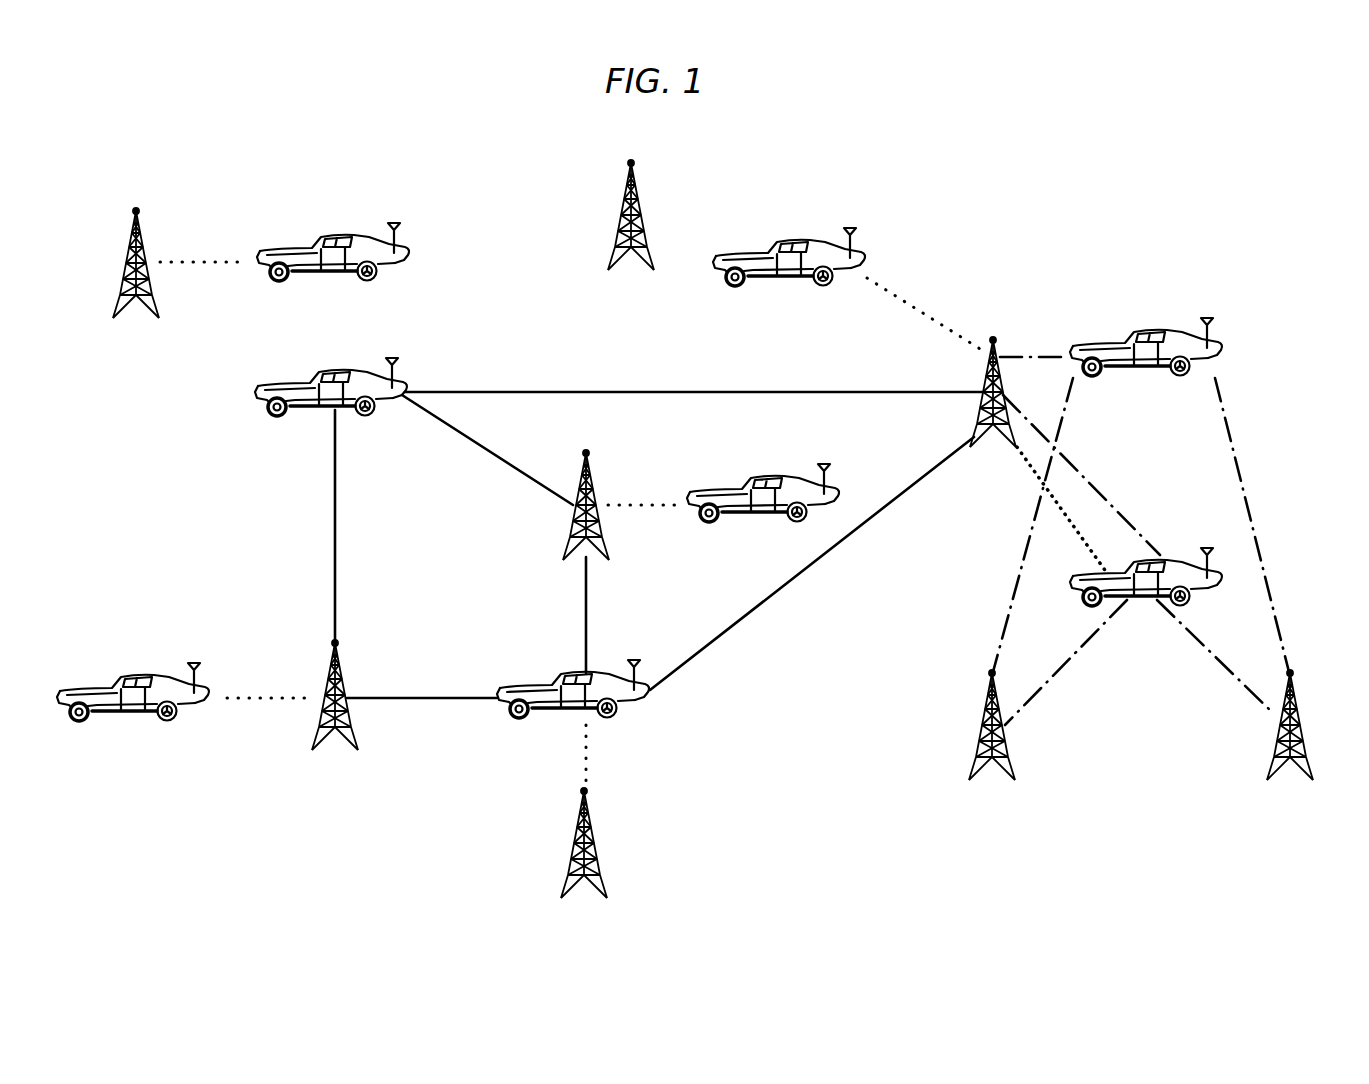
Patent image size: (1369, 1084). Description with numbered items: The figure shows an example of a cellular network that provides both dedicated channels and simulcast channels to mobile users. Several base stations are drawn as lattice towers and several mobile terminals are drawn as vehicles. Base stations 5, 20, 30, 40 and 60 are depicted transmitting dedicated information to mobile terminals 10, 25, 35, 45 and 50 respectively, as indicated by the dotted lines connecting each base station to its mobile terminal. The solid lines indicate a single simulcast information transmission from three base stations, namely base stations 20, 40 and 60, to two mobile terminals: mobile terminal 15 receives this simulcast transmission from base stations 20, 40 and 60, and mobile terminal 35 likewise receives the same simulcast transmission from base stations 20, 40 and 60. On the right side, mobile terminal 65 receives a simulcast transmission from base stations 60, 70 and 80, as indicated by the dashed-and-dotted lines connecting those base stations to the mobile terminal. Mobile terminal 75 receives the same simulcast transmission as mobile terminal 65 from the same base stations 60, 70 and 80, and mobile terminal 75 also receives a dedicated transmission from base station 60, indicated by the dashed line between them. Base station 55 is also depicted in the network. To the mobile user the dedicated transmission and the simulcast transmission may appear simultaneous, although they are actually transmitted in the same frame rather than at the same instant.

The base station 5 is at (124, 261).
The mobile terminal 10 is at (348, 235).
The mobile terminal 15 is at (347, 370).
The base station 20 is at (329, 668).
The mobile terminal 25 is at (153, 675).
The base station 30 is at (574, 842).
The mobile terminal 35 is at (540, 672).
The base station 40 is at (569, 533).
The mobile terminal 45 is at (790, 476).
The mobile terminal 50 is at (810, 240).
The base station 55 is at (620, 212).
The base station 60 is at (993, 338).
The mobile terminal 65 is at (1163, 330).
The base station 70 is at (1275, 750).
The mobile terminal 75 is at (1183, 560).
The base station 80 is at (982, 723).